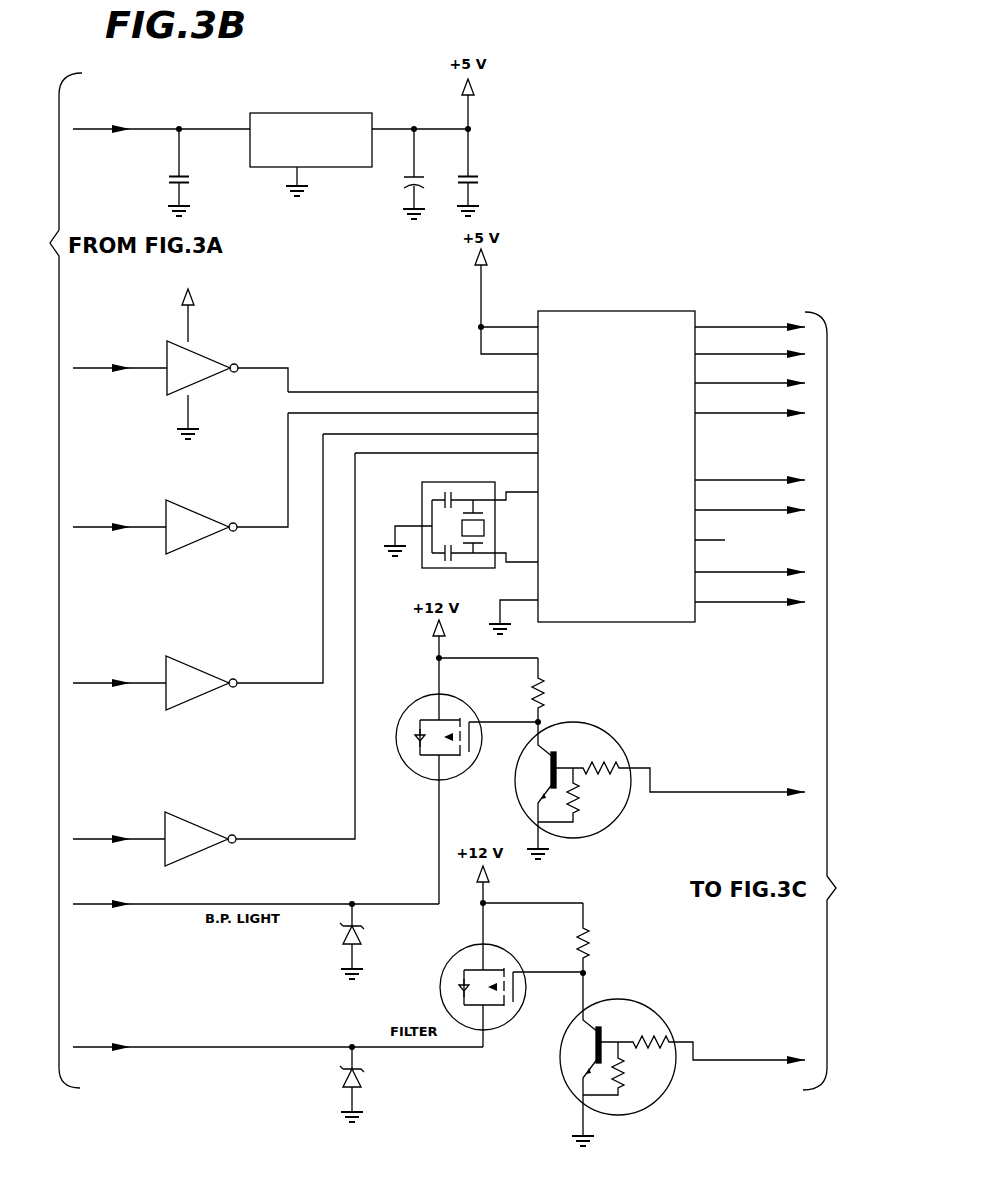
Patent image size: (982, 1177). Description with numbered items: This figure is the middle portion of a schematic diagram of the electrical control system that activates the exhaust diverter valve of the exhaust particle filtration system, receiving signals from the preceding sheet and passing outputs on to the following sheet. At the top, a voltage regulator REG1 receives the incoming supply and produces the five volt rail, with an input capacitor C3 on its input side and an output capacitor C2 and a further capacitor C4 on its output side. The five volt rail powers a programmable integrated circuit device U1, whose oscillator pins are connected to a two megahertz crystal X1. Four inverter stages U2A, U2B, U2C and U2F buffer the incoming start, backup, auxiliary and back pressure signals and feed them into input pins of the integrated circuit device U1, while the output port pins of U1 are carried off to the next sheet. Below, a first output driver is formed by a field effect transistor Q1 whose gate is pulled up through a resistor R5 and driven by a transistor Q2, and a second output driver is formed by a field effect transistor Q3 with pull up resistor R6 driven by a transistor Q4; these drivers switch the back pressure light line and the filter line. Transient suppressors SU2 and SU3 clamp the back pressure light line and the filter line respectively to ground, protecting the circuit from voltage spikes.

The voltage regulator LM2931Z-5.0 REG1 is at (311, 136).
The capacitor 150uF/10V C2 is at (378, 174).
The capacitor .1uF C3 is at (200, 172).
The capacitor .1uF C4 is at (489, 172).
The microcontroller PIC16C554/04 U1 is at (647, 456).
The inverter CD4049UBMS (START) U2A is at (193, 354).
The inverter CD4049UBMS (BACKUP) U2B is at (180, 483).
The inverter CD4049UBMS (AUX.) U2C is at (198, 572).
The inverter CD4049UBMS (BACK PRESSURE) U2F is at (214, 659).
The crystal oscillator 2 MHz X1 is at (461, 542).
The MOSFET IRFD9014 Q1 is at (467, 782).
The transistor FJN3301R Q2 is at (660, 781).
The MOSFET IRF9Z24N Q3 is at (511, 979).
The transistor FFJN3301R Q4 is at (682, 1059).
The resistor 10K R5 is at (556, 690).
The resistor 10K R6 is at (601, 938).
The transient suppressor P6KE20A SU2 is at (392, 941).
The transient suppressor P6KE20A SU3 is at (392, 1084).